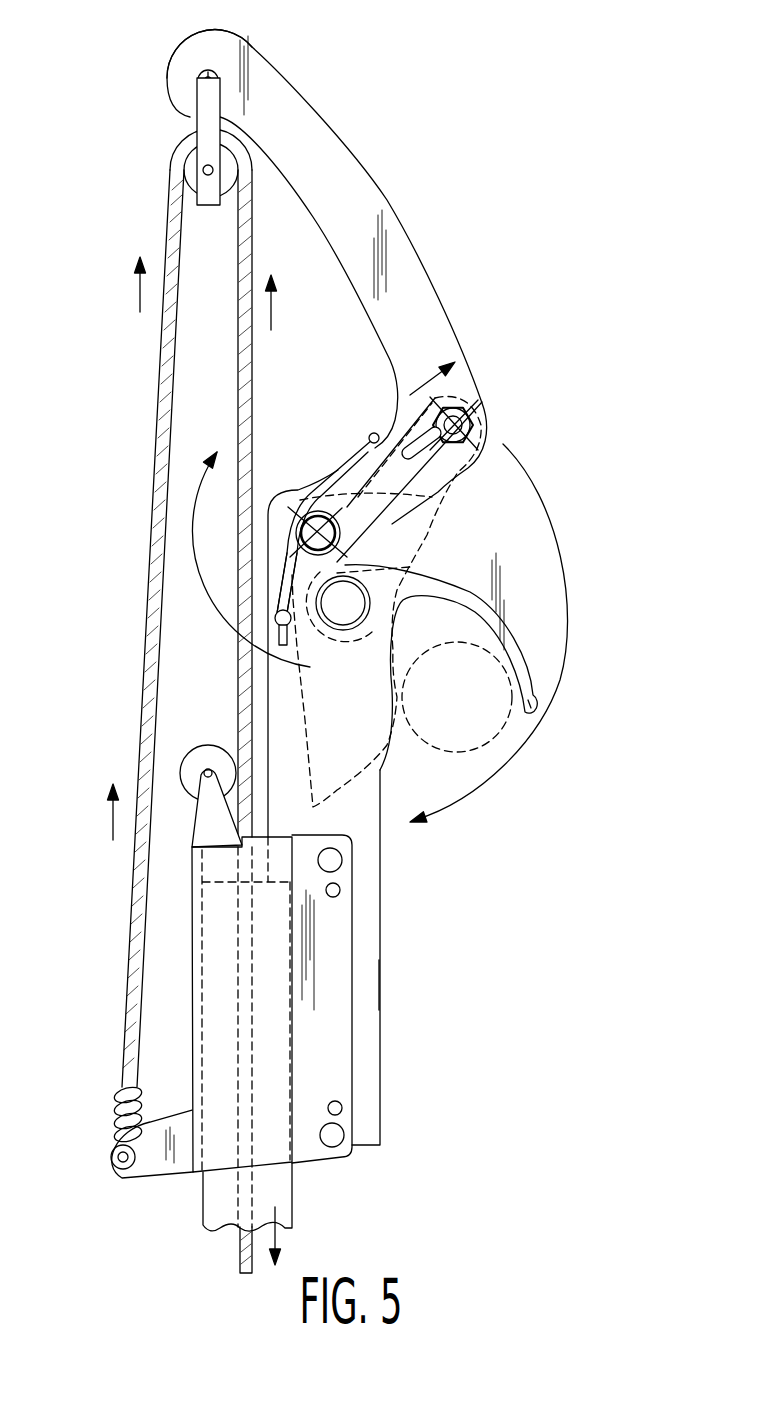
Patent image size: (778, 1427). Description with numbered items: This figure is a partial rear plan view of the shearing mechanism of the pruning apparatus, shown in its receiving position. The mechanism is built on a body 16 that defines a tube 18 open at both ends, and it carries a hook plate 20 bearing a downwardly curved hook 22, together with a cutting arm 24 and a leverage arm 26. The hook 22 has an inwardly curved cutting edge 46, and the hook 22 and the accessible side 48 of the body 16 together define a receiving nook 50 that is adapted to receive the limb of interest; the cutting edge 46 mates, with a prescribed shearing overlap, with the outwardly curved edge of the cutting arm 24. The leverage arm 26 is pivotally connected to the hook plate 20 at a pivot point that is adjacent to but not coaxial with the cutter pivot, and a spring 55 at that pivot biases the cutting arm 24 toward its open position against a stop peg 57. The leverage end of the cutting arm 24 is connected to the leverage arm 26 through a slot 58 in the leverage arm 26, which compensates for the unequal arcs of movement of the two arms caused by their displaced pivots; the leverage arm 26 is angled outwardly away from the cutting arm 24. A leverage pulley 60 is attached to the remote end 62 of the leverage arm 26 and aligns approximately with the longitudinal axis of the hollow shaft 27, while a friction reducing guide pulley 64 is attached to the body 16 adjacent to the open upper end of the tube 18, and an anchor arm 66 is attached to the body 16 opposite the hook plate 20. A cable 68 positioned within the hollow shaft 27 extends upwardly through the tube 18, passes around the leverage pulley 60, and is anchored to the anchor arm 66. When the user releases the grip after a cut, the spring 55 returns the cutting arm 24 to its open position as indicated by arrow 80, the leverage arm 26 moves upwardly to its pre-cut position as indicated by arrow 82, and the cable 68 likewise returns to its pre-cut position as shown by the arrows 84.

The body 16 is at (353, 950).
The tube 18 is at (208, 937).
The hook plate 20 is at (366, 1040).
The hook 22 is at (449, 575).
The cutting arm 24 is at (329, 717).
The leverage arm 26 is at (360, 160).
The hollow shaft 27 is at (294, 1210).
The cutting edge 46 is at (524, 702).
The accessible side 48 is at (382, 983).
The receiving nook 50 is at (410, 635).
The spring 55 is at (345, 463).
The stop peg 57 is at (275, 626).
The slot 58 is at (433, 450).
The leverage pulley 60 is at (176, 158).
The remote end 62 is at (181, 45).
The guide pulley 64 is at (178, 760).
The anchor arm 66 is at (158, 1172).
The cable 68 is at (148, 660).
The arrow 80 is at (192, 543).
The arrow 82 is at (545, 490).
The arrows 84 is at (273, 300).